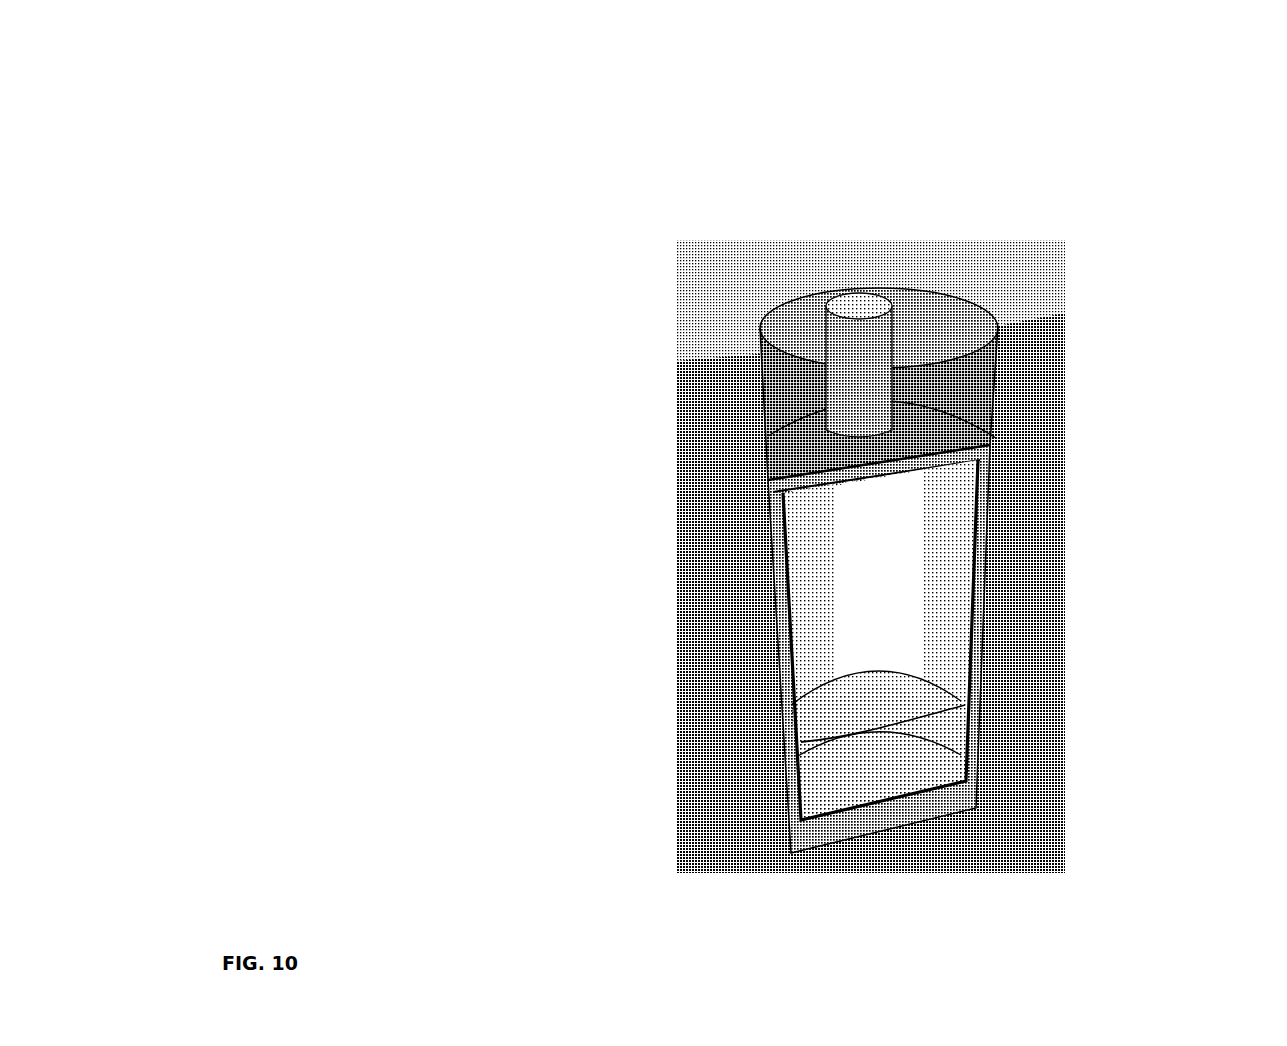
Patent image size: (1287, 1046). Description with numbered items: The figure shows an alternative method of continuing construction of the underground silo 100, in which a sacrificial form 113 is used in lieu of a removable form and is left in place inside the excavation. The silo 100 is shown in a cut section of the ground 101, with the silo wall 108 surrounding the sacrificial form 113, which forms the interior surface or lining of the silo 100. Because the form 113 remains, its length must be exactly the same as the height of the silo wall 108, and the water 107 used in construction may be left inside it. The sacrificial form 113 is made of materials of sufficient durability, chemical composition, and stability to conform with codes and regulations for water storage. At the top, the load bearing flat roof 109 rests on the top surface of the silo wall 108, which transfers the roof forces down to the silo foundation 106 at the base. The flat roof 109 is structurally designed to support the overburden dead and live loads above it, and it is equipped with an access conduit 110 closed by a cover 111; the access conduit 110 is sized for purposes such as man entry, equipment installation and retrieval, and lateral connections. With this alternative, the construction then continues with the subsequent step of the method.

The underground silo 100 is at (312, 142).
The ground 101 is at (682, 625).
The silo foundation 106 is at (883, 808).
The water 107 is at (957, 697).
The silo wall 108 is at (972, 597).
The load bearing flat roof 109 is at (987, 410).
The access conduit 110 is at (823, 347).
The cover 111 is at (857, 305).
The sacrificial form 113 is at (907, 542).